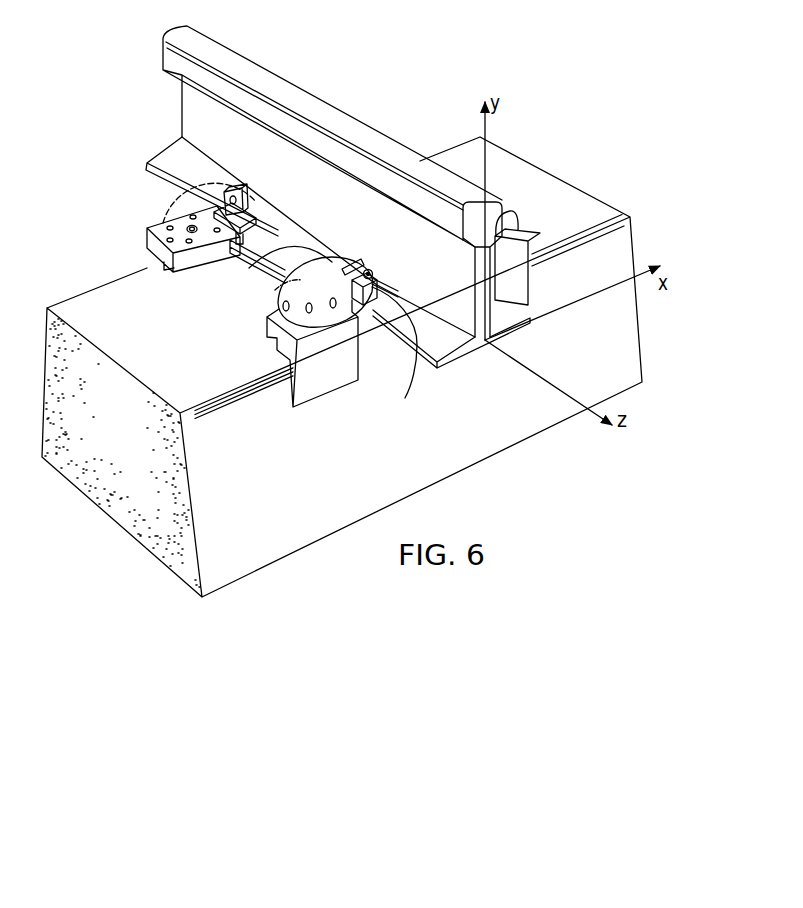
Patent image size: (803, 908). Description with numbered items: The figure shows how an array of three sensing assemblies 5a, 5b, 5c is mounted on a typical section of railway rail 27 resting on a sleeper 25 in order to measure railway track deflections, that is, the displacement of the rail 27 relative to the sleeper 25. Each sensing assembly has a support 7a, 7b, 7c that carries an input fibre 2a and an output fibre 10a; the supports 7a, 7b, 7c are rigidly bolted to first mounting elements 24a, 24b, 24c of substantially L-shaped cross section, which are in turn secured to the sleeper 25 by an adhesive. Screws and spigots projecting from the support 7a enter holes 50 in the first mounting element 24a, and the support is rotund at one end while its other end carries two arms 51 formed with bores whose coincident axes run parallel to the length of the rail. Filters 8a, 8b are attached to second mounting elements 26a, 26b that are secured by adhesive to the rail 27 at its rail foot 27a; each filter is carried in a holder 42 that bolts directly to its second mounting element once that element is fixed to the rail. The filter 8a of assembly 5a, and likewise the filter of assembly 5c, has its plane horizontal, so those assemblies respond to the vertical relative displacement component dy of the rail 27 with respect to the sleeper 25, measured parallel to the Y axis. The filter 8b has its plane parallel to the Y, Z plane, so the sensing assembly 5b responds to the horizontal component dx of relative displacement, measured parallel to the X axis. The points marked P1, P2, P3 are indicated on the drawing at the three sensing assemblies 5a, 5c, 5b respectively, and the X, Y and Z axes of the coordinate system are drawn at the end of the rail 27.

The railway rail 27 is at (392, 151).
The rail foot 27a is at (458, 353).
The sleeper 25 is at (293, 540).
The first mounting element 24a is at (309, 408).
The first mounting element 24b is at (148, 230).
The first mounting element 24c is at (533, 232).
The second mounting element 26a is at (372, 308).
The second mounting element 26b is at (268, 214).
The holder 42 is at (380, 275).
The arms 51 is at (400, 292).
The holes 50 is at (188, 243).
The sensing assembly 5a is at (255, 327).
The sensing assembly 5b is at (136, 260).
The sensing assembly 5c is at (506, 195).
The support 7a is at (284, 300).
The support 7b is at (166, 214).
The support 7c is at (507, 230).
The filter 8a is at (376, 272).
The filter 8b is at (256, 190).
The guide arc 2a is at (291, 250).
The cable 10a is at (414, 310).
The pivot point of first sensor P1 is at (282, 292).
The pivot point of third sensor P2 is at (527, 222).
The pivot point of second sensor P3 is at (186, 186).
The horizontal displacement component dx is at (291, 170).
The vertical displacement component dy is at (365, 214).